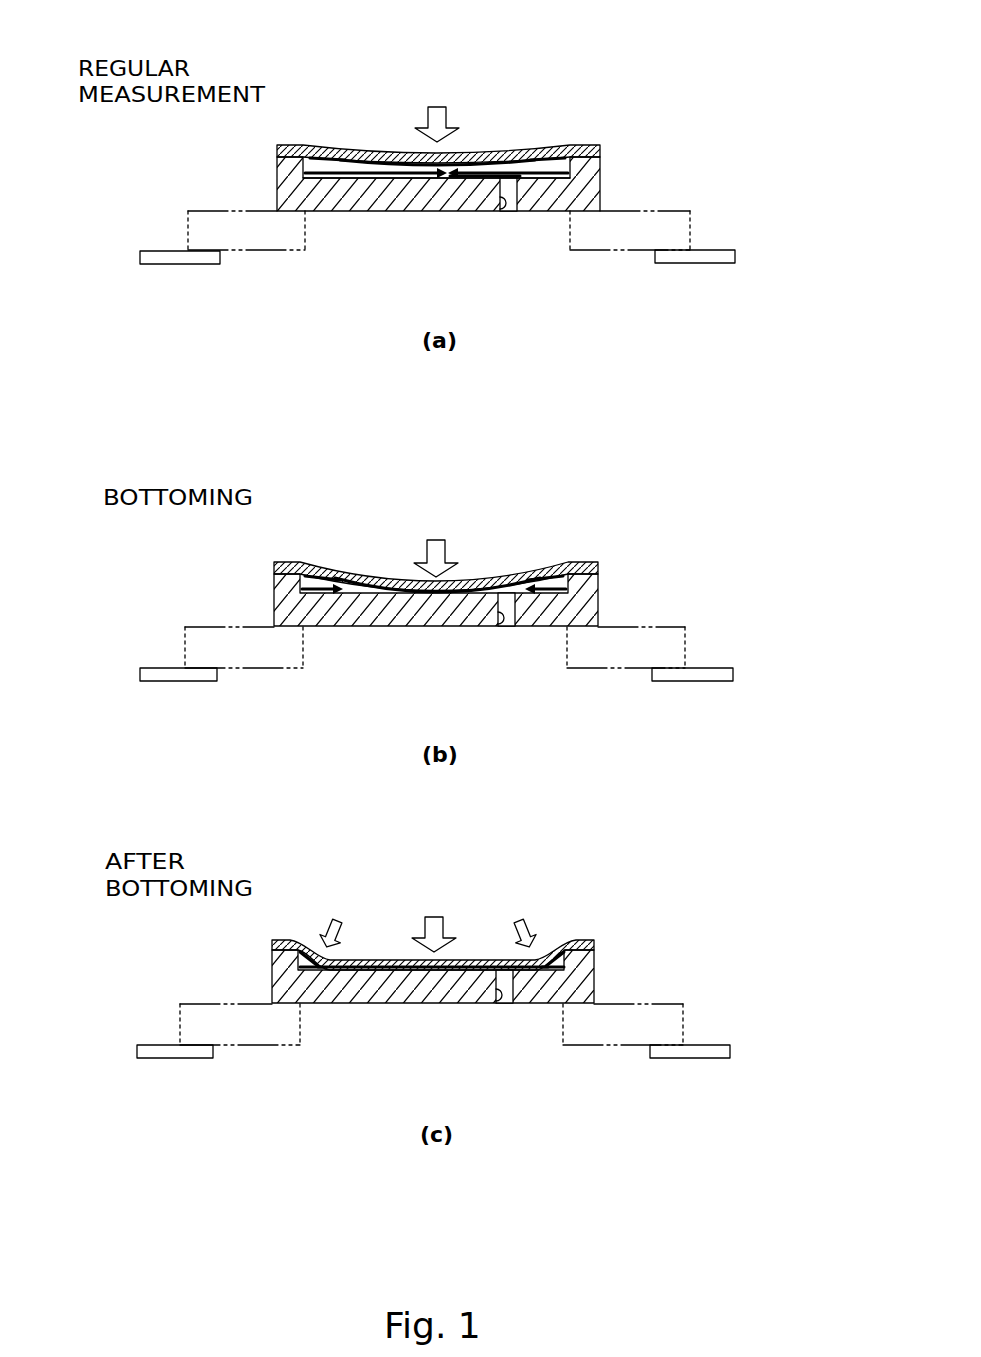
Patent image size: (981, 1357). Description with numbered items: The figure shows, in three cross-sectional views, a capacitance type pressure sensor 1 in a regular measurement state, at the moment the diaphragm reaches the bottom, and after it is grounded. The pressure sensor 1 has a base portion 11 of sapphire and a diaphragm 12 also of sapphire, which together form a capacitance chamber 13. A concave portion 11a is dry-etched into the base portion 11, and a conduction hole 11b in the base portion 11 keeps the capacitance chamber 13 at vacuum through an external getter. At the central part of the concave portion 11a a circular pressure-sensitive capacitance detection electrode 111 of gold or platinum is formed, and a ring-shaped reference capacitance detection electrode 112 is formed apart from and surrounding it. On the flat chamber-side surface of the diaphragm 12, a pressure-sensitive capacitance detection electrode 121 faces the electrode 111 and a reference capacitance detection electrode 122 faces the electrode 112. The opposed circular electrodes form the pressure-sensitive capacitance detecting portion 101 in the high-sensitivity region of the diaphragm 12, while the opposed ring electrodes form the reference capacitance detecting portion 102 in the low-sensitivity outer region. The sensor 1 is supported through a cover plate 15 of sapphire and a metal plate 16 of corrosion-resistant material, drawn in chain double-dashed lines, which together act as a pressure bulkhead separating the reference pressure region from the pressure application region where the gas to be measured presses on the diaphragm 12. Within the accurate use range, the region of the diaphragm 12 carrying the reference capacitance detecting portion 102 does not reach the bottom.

The capacitance type pressure sensor 1 is at (590, 118).
The base portion 11 is at (600, 180).
The concave portion 11a is at (500, 157).
The conduction hole 11b is at (503, 213).
The diaphragm 12 is at (600, 150).
The capacitance chamber 13 is at (436, 93).
The cover plate 15 is at (290, 250).
The metal plate 16 is at (200, 264).
The pressure-sensitive capacitance detecting portion 101 is at (433, 516).
The reference capacitance detecting portion 102 is at (463, 562).
The pressure-sensitive capacitance detection electrode 111 is at (413, 158).
The reference capacitance detection electrode 112 is at (339, 156).
The pressure-sensitive capacitance detection electrode of the diaphragm 121 is at (445, 176).
The reference capacitance detection electrode of the diaphragm 122 is at (333, 175).